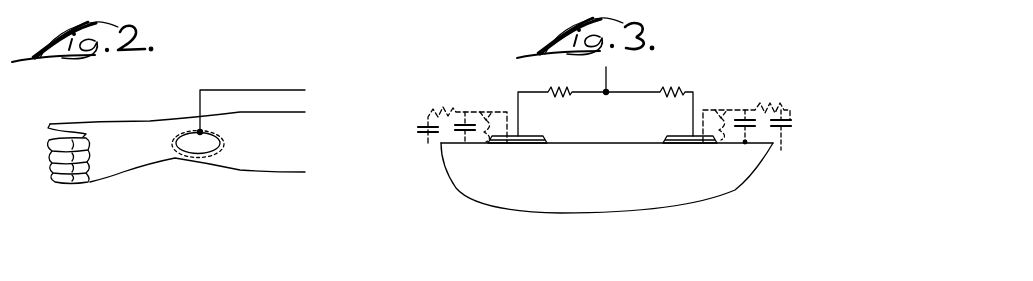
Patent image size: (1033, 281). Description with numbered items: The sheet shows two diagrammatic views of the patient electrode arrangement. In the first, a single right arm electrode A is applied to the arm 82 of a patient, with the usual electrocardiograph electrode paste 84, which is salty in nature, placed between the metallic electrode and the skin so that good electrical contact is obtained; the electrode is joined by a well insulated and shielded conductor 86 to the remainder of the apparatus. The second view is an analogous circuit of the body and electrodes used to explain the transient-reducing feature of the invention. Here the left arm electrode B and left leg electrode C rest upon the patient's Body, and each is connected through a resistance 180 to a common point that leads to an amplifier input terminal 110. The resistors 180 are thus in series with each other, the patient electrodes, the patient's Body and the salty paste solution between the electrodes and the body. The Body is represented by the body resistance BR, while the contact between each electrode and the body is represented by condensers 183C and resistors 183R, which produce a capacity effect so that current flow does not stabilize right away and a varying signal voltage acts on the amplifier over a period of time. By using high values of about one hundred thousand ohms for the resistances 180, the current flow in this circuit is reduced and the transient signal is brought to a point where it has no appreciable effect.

In FIG. 2, the arm of a patient 82 is at (159, 158).
In FIG. 2, the electrocardiograph electrode paste 84 is at (210, 156).
In FIG. 3, the electrocardiograph electrode paste 84 is at (529, 145).
In FIG. 2, the insulated and shielded conductors 86 is at (247, 90).
In FIG. 3, the insulated and shielded conductors 86 is at (643, 91).
In FIG. 3, the input terminal 110 is at (611, 73).
In FIG. 3, the resistance 180 is at (559, 91).
In FIG. 3, the resistors 183R is at (497, 112).
In FIG. 3, the condensers 183C is at (468, 134).
In FIG. 2, the right arm electrode A is at (186, 135).
In FIG. 3, the left arm electrode B is at (528, 135).
In FIG. 3, the left leg electrode C is at (677, 135).
In FIG. 3, the body resistance BR is at (632, 195).
In FIG. 3, the patient's body Body is at (654, 182).